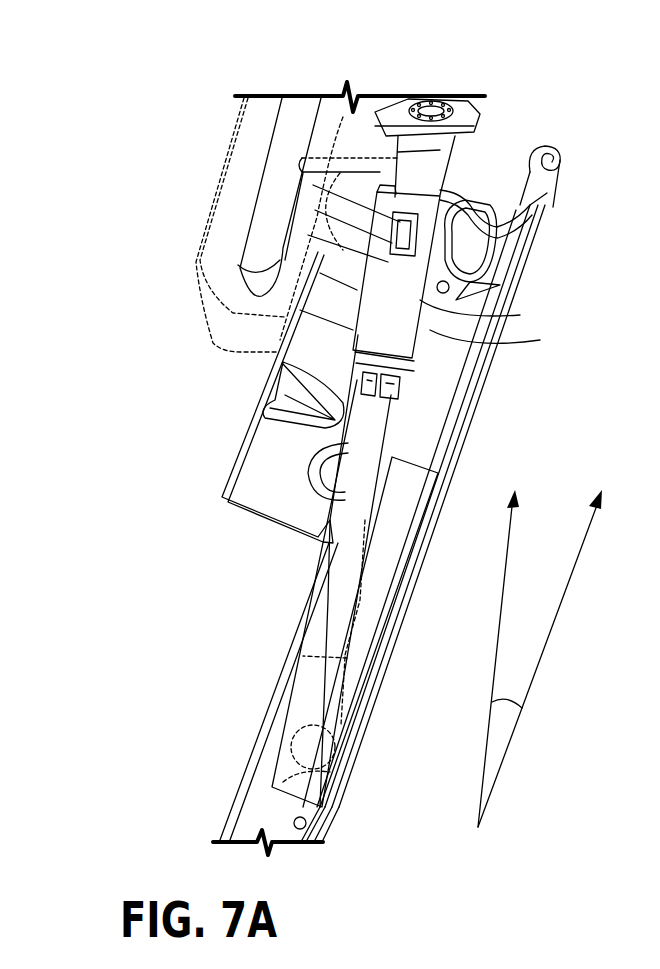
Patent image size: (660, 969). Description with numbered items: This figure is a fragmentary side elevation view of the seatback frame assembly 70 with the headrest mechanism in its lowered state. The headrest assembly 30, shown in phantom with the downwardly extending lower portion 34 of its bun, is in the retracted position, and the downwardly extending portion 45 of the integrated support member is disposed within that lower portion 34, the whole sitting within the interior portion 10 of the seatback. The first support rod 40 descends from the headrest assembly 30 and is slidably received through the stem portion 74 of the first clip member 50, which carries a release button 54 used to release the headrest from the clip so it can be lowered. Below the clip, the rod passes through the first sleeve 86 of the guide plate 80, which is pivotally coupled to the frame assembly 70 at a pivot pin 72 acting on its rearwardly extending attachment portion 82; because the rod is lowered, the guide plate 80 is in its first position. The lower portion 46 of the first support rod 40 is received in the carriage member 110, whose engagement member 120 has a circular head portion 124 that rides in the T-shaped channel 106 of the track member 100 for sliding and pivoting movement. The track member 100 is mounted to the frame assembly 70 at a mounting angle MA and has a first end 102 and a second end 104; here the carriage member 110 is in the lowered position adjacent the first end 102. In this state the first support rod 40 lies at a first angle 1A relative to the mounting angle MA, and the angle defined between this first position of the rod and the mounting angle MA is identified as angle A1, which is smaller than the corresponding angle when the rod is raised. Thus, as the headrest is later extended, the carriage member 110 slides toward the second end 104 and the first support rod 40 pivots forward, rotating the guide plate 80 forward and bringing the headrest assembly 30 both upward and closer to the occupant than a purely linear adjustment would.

The interior portion 10 is at (479, 166).
The headrest assembly 30 is at (229, 118).
The downwardly extending lower portion 34 is at (193, 250).
The first support rod 40 is at (398, 412).
The downwardly extending portion 45 is at (261, 330).
The lower portion 46 is at (347, 643).
The first clip member 50 is at (482, 110).
The release button 54 is at (432, 100).
The frame assembly 70 is at (477, 432).
The pivot pin 72 is at (455, 258).
The stem portion 74 is at (440, 152).
The guide plate 80 is at (452, 352).
The rearwardly extending attachment portion 82 is at (400, 323).
The first sleeve 86 is at (424, 345).
The track member 100 is at (437, 547).
The first end 102 is at (327, 794).
The second end 104 is at (443, 491).
The channel 106 is at (381, 588).
The carriage member 110 is at (300, 680).
The engagement member 120 is at (287, 738).
The head portion 124 is at (283, 782).
The first angle 1A is at (510, 583).
The mounting angle MA is at (573, 577).
The angle A1 is at (530, 684).